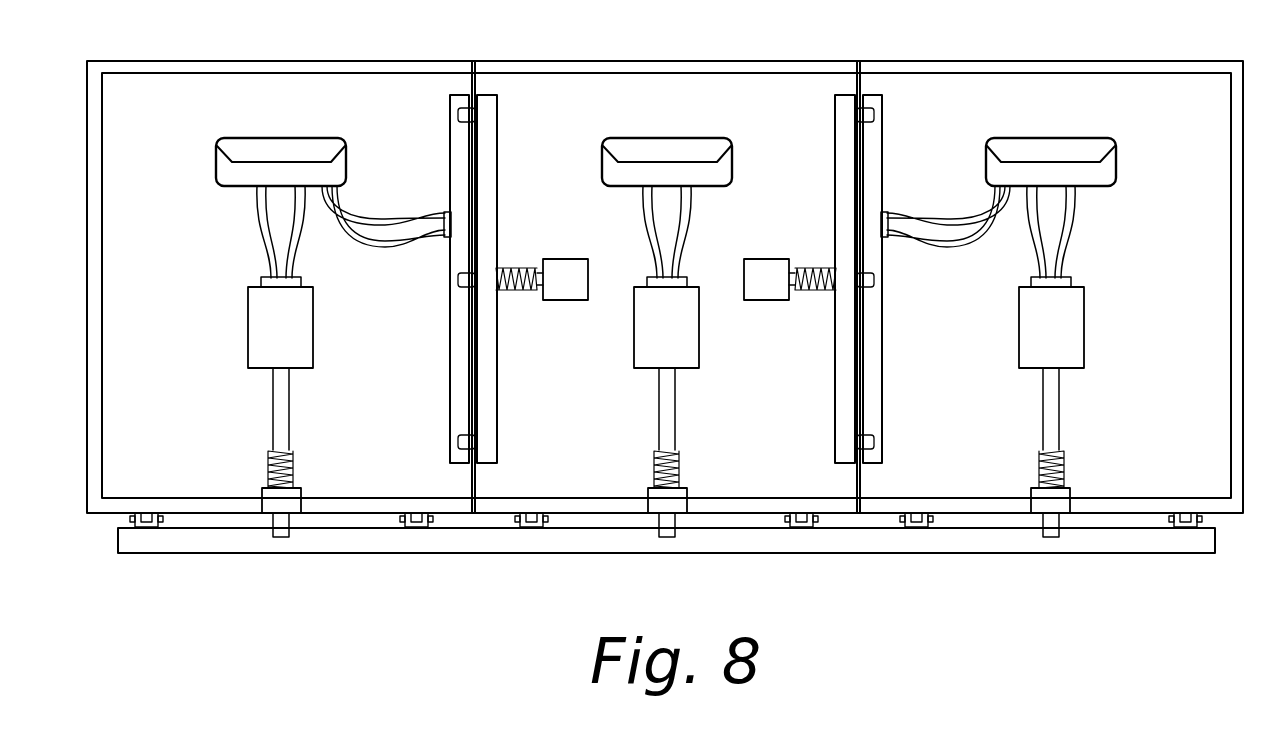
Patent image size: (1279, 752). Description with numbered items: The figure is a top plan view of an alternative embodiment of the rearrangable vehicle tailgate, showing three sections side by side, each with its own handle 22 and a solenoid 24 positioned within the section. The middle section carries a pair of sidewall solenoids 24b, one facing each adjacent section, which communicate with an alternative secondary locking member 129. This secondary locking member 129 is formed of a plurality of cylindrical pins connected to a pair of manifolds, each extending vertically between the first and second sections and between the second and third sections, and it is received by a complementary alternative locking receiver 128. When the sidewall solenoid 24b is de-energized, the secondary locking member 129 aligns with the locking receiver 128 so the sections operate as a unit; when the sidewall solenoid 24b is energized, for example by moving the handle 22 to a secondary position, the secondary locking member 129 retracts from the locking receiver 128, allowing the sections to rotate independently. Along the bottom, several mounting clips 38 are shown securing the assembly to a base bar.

The handle 22 is at (667, 170).
The solenoid 24 is at (695, 295).
The sidewall solenoid 24b is at (567, 300).
The locking receiver 128 is at (455, 140).
The secondary locking member 129 is at (496, 128).
The mounting clip 38 is at (155, 528).